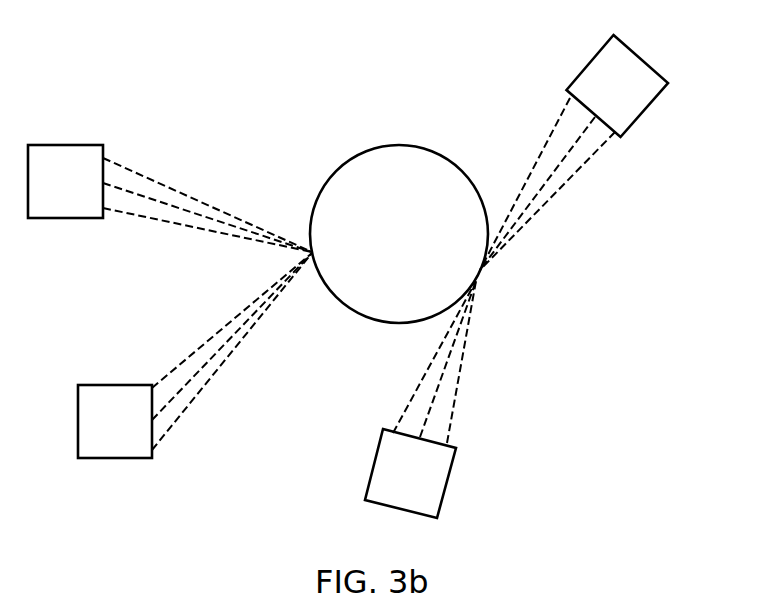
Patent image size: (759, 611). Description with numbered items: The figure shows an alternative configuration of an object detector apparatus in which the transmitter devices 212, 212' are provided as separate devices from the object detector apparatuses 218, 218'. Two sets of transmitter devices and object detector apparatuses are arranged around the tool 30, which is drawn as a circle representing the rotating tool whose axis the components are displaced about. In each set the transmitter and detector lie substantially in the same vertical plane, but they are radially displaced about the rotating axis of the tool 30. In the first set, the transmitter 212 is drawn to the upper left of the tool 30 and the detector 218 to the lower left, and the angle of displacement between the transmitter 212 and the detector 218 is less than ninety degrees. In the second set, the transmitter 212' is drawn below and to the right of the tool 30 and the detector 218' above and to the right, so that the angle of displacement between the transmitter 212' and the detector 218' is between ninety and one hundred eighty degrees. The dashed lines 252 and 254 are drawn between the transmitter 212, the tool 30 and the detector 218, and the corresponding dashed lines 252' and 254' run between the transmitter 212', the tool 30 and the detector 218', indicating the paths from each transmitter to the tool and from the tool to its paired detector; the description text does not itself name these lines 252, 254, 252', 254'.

The tool 30 is at (415, 247).
The transmitter device 212 is at (65, 157).
The incident beam paths 252 is at (207, 198).
The object detector apparatus 218 is at (114, 397).
The scattered/detected beam paths 254 is at (232, 351).
The object detector apparatus 218' is at (647, 91).
The second detected beam paths 254' is at (547, 184).
The transmitter device 212' is at (446, 475).
The second incident beam paths 252' is at (467, 362).